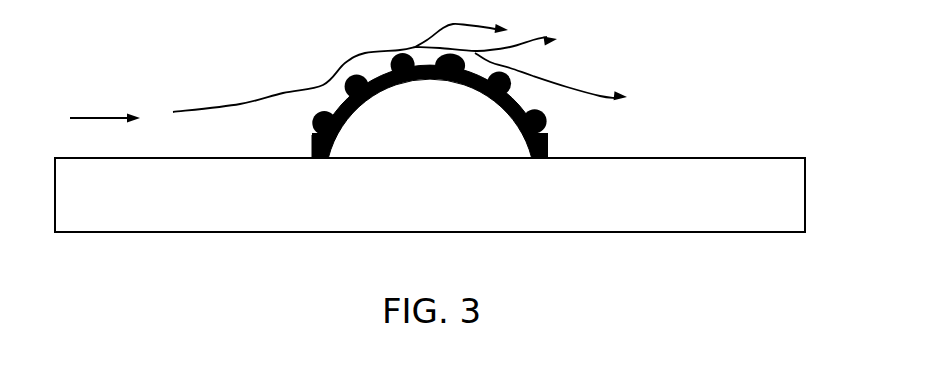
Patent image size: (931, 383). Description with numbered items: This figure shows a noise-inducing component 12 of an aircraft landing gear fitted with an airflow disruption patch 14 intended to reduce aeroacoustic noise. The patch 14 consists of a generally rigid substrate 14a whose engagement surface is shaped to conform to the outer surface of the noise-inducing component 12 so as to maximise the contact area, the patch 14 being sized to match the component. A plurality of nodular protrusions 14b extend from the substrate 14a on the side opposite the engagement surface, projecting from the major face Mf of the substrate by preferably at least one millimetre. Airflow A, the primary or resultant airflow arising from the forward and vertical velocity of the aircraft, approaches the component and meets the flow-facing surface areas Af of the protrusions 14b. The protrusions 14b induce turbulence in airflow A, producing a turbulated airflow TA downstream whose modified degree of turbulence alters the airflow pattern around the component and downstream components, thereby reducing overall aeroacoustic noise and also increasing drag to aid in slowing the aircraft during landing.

The noise-inducing component 12 is at (521, 123).
The airflow disruption patch 14 is at (358, 107).
The substrate 14a is at (328, 147).
The nodular protrusions 14b is at (311, 118).
The major face Mf is at (312, 145).
The flow-facing surface areas Af is at (382, 68).
The turbulated airflow TA is at (553, 74).
The airflow A is at (105, 104).